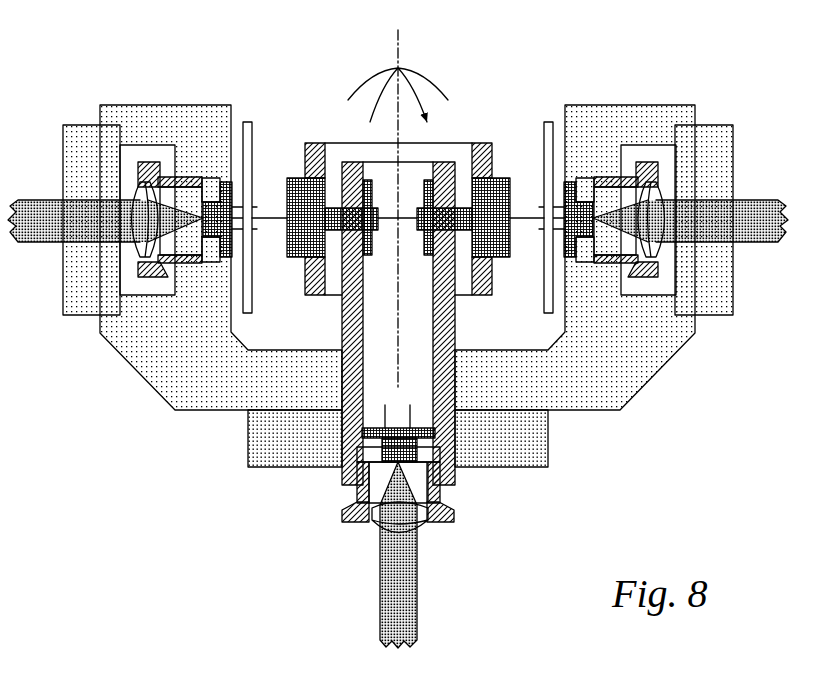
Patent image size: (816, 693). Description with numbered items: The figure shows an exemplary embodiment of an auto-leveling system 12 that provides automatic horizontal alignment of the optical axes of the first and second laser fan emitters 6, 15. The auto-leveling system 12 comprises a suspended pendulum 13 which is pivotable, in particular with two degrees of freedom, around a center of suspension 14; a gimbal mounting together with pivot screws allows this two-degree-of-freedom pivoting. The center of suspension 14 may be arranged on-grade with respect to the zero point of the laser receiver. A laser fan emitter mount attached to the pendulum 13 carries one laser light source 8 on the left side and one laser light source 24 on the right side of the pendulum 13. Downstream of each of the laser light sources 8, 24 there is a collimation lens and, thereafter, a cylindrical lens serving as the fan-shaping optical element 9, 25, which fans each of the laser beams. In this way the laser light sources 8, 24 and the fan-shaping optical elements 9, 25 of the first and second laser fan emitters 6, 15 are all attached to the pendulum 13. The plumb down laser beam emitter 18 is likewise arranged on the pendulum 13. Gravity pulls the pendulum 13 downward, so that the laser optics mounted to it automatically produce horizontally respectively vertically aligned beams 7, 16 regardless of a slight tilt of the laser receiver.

The first laser fan emitter 6 is at (52, 181).
The laser beam 7 is at (30, 228).
The laser light source 8 is at (228, 183).
The fan-shaping optical element 9 is at (81, 165).
The auto-leveling system 12 is at (198, 38).
The pendulum 13 is at (353, 332).
The center of suspension 14 is at (398, 218).
The second laser fan emitter 15 is at (742, 178).
The laser beam 16 is at (760, 233).
The plumb down laser beam emitter 18 is at (440, 553).
The laser light source 24 is at (573, 185).
The fan-shaping optical element 25 is at (708, 167).